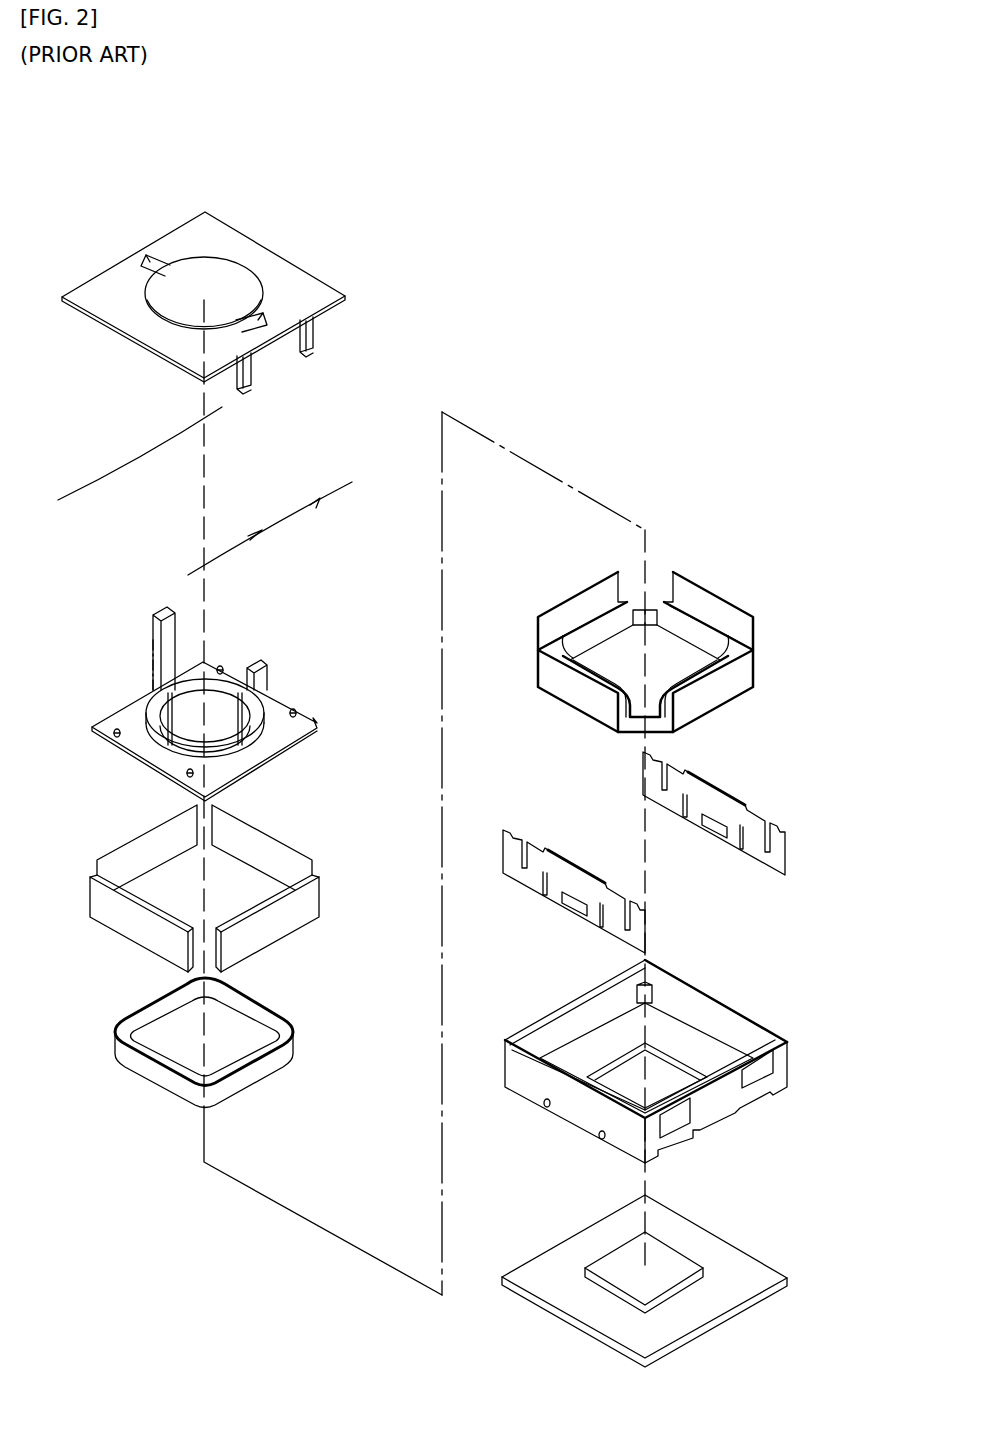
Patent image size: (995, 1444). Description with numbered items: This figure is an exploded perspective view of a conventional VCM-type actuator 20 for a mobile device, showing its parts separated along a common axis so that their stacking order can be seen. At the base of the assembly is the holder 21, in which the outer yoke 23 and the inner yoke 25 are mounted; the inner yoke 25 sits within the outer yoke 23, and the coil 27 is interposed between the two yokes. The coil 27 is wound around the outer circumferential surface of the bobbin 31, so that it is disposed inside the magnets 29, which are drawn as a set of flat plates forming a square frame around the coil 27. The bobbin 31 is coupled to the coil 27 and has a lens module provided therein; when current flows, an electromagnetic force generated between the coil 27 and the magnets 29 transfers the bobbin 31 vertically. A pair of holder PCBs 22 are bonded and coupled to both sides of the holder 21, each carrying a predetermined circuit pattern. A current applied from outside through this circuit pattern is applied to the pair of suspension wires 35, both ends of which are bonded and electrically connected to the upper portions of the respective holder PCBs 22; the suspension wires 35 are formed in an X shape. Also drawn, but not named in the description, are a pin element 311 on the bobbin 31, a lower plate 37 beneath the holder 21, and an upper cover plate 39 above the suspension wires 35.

The actuator 20 is at (492, 355).
The holder 21 is at (747, 1032).
The holder PCBs 22 is at (788, 848).
The outer yoke 23 is at (728, 613).
The inner yoke 25 is at (718, 667).
The coil 27 is at (275, 1023).
The magnets 29 is at (295, 858).
The bobbin 31 is at (313, 718).
The bobbin pins 311 is at (153, 615).
The suspension wires 35 is at (352, 482).
The base plate 37 is at (760, 1265).
The top cover plate 39 is at (320, 284).